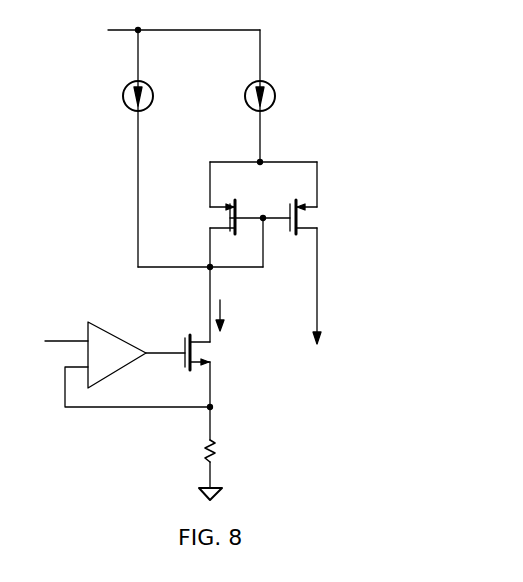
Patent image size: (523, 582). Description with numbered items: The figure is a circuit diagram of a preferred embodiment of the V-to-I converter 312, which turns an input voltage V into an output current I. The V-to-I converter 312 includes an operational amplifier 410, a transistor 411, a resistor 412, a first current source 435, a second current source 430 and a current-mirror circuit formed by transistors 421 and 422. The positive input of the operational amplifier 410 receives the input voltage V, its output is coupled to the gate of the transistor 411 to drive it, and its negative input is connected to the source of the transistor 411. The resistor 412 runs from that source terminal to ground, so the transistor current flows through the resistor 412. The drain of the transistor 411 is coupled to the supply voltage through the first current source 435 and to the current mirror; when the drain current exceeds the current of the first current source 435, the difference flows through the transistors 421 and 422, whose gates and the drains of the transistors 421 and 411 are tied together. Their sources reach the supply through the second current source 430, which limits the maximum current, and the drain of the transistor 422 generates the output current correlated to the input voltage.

The V-to-I converter 312 is at (434, 41).
The first current source 435 is at (137, 96).
The second current source 430 is at (280, 96).
The transistor 421 is at (207, 233).
The transistor 422 is at (322, 286).
The operational amplifier 410 is at (114, 361).
The transistor 411 is at (217, 387).
The resistor 412 is at (226, 470).